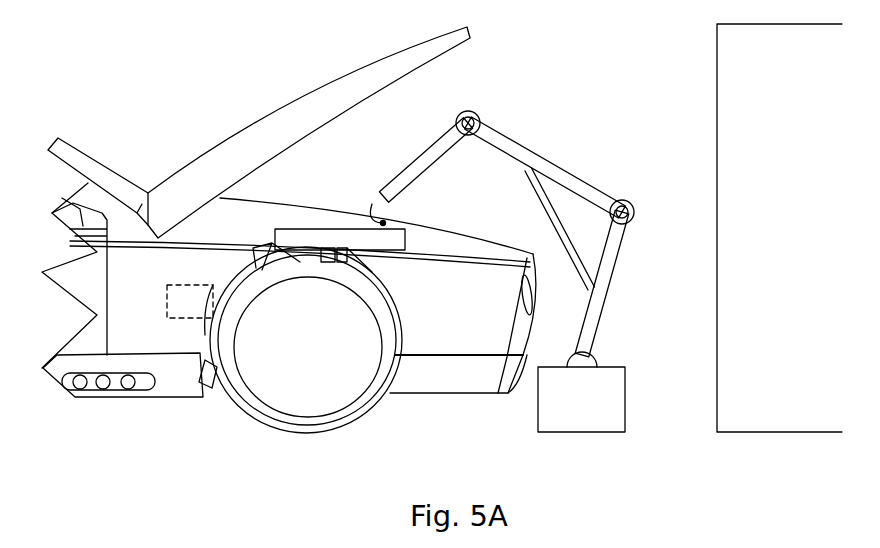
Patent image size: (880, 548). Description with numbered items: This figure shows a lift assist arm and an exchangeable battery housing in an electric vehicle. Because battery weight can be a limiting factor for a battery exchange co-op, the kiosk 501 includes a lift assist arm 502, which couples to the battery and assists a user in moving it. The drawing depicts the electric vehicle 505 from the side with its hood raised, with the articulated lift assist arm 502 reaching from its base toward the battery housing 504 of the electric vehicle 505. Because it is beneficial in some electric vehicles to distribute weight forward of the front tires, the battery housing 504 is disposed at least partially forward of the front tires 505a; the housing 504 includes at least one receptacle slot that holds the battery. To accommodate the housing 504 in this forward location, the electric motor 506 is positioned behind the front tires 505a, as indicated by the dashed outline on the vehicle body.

The kiosk 501 is at (788, 223).
The lift assist arm 502 is at (605, 408).
The battery housing 504 is at (303, 228).
The electric vehicle 505 is at (116, 115).
The front tires 505a is at (242, 408).
The electric motor 506 is at (167, 302).